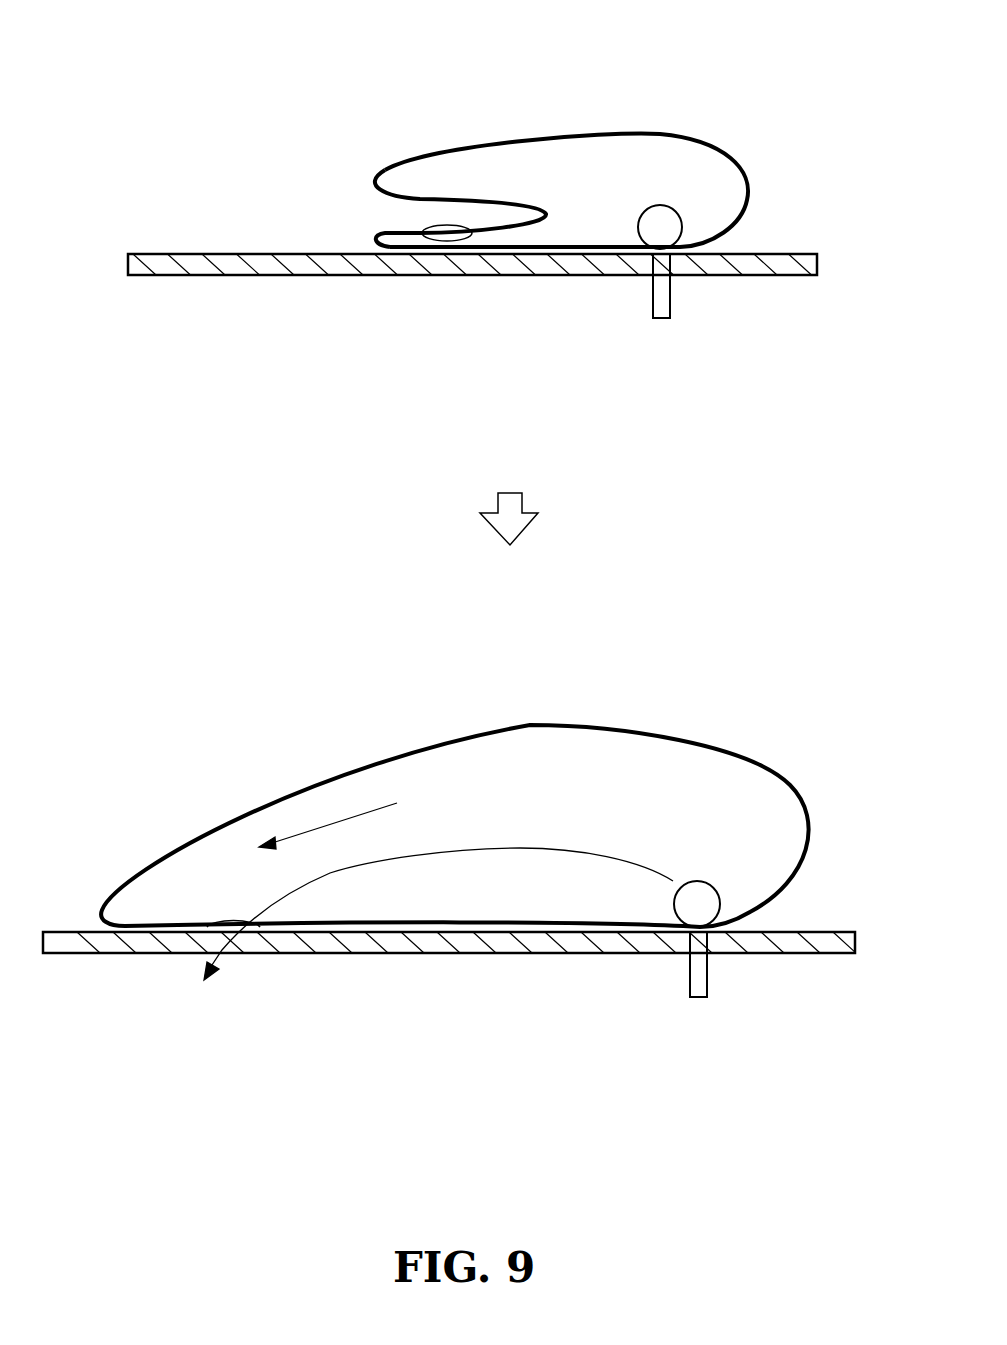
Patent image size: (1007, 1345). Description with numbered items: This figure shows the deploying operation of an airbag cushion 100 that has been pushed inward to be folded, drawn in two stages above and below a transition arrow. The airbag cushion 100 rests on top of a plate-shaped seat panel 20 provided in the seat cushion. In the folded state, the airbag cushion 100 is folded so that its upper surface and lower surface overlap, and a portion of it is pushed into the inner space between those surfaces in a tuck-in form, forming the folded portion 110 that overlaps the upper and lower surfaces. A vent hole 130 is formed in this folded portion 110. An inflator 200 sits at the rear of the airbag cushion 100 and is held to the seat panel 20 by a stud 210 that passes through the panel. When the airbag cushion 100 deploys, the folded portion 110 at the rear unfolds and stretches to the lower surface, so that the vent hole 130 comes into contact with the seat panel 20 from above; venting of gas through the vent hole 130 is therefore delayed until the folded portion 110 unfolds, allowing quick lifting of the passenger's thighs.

The seat panel 20 is at (287, 275).
The airbag cushion 100 is at (583, 133).
The folded portion 110 is at (357, 181).
The vent hole 130 is at (447, 241).
The inflator 200 is at (670, 213).
The stud 210 is at (658, 306).